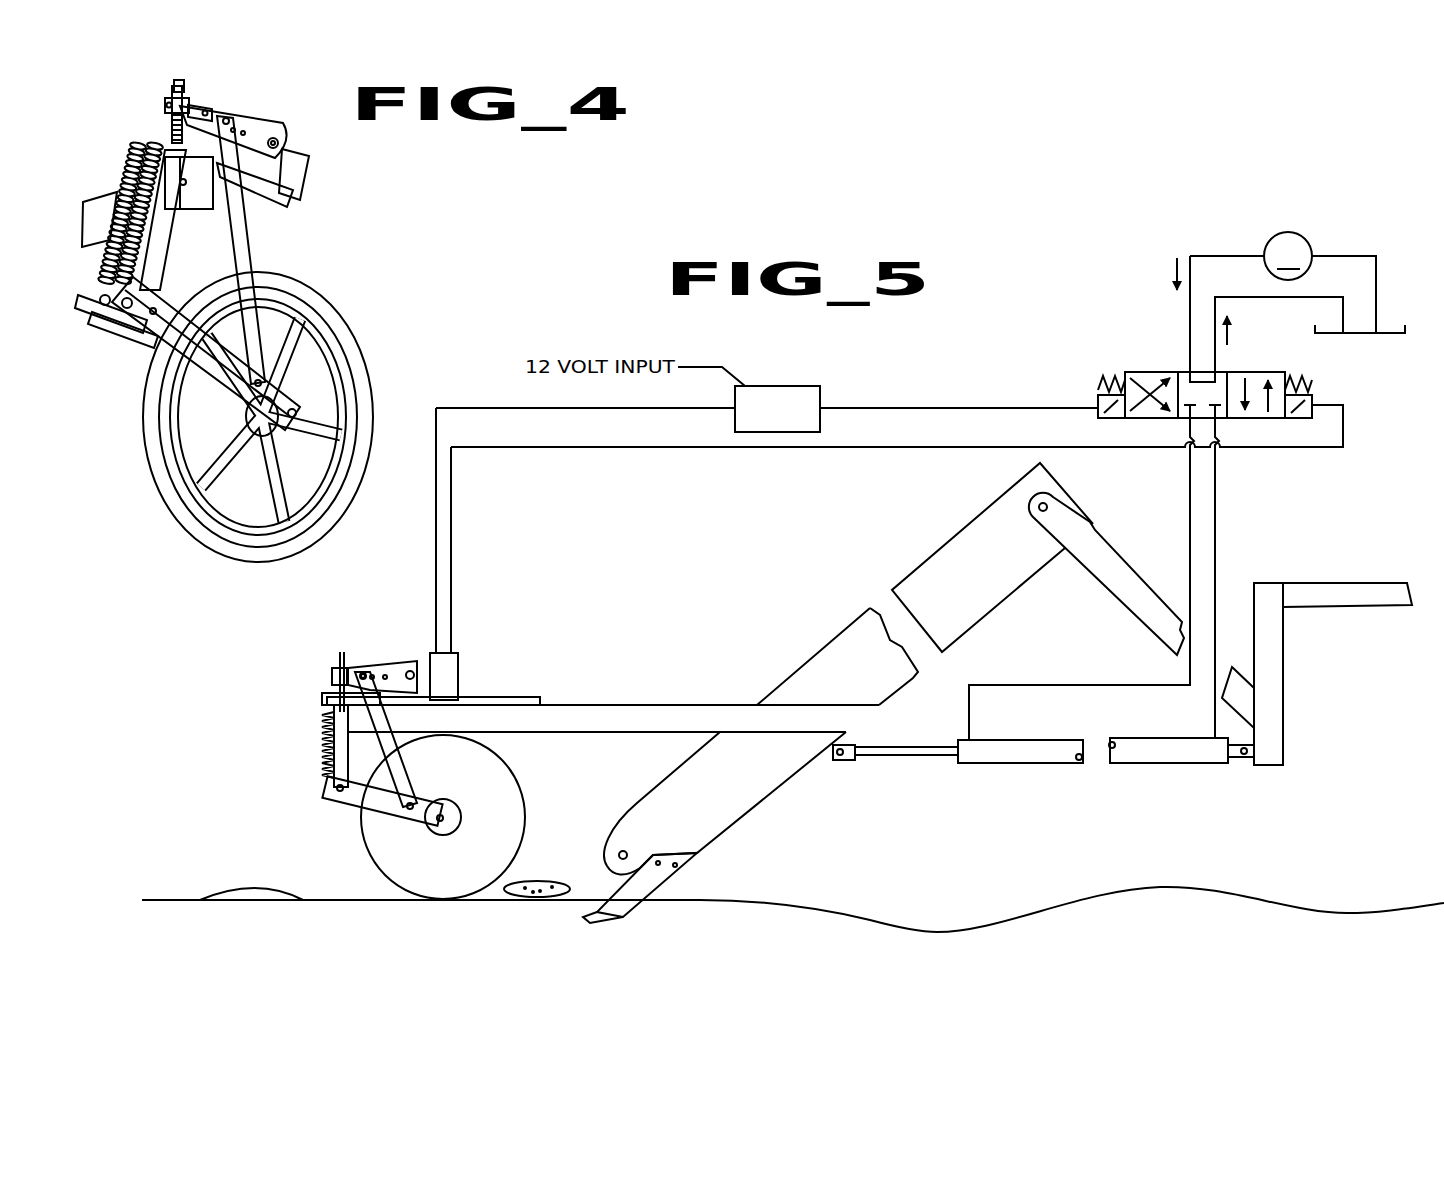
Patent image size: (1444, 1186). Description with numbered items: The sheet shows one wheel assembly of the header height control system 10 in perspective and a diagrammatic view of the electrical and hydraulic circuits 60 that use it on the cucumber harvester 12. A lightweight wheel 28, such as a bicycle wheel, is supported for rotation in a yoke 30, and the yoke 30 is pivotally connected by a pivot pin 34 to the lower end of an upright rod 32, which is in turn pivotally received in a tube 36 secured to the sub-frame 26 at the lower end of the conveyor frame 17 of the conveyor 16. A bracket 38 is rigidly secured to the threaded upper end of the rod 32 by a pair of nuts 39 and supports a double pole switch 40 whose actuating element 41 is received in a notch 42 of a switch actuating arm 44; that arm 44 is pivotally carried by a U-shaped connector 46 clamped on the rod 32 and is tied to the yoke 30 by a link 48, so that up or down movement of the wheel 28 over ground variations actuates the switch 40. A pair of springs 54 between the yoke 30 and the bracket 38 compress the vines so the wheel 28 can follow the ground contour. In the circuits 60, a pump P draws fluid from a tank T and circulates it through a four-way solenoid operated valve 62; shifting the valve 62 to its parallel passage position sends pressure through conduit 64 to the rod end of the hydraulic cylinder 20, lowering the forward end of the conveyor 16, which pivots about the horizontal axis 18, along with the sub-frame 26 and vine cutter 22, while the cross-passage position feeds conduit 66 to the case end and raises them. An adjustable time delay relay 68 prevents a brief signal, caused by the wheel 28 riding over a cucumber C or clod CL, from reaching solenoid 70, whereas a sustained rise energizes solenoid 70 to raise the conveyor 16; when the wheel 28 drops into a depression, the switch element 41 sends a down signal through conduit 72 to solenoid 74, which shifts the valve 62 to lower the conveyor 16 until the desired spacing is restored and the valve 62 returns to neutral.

In FIG. 4, the header height control system 10 is at (348, 167).
In FIG. 5, the header height control system 10 is at (480, 610).
In FIG. 5, the power driven harvester 12 is at (1300, 664).
In FIG. 5, the conveyor 16 is at (935, 548).
In FIG. 5, the conveyor frame 17 is at (850, 627).
In FIG. 5, the horizontal axis 18 is at (1050, 505).
In FIG. 5, the hydraulic cylinder 20 is at (1133, 764).
In FIG. 5, the vine cutter 22 is at (597, 915).
In FIG. 5, the sub-frame 26 is at (696, 712).
In FIG. 4, the wheel 28 is at (170, 508).
In FIG. 5, the wheel 28 is at (503, 772).
In FIG. 4, the yoke 30 is at (200, 384).
In FIG. 5, the yoke 30 is at (382, 803).
In FIG. 4, the rod 32 is at (172, 132).
In FIG. 5, the rod 32 is at (338, 665).
In FIG. 4, the pivot pin 34 is at (157, 342).
In FIG. 5, the pivot pin 34 is at (327, 795).
In FIG. 4, the tube 36 is at (163, 262).
In FIG. 5, the tube 36 is at (323, 773).
In FIG. 4, the bracket 38 is at (287, 212).
In FIG. 5, the bracket 38 is at (480, 700).
In FIG. 5, the nuts 39 is at (327, 712).
In FIG. 4, the double pole switch 40 is at (296, 187).
In FIG. 5, the double pole switch 40 is at (459, 676).
In FIG. 4, the actuating element 41 is at (295, 162).
In FIG. 5, the actuating element 41 is at (458, 658).
In FIG. 4, the notch 42 is at (272, 135).
In FIG. 5, the notch 42 is at (409, 670).
In FIG. 4, the switch actuating arm 44 is at (258, 122).
In FIG. 5, the switch actuating arm 44 is at (370, 665).
In FIG. 4, the U-shaped connector 46 is at (166, 100).
In FIG. 5, the U-shaped connector 46 is at (330, 677).
In FIG. 4, the link 48 is at (262, 264).
In FIG. 5, the link 48 is at (405, 768).
In FIG. 4, the springs 54 is at (145, 170).
In FIG. 5, the springs 54 is at (325, 760).
In FIG. 5, the combined hydraulic and electrical circuits 60 is at (1315, 228).
In FIG. 5, the four-way solenoid operated valve 62 is at (1177, 370).
In FIG. 5, the conduit 64 is at (1178, 685).
In FIG. 5, the conduit 66 is at (1218, 550).
In FIG. 5, the adjustable time delay relay 68 is at (823, 389).
In FIG. 5, the solenoid 70 is at (1097, 414).
In FIG. 5, the conduit 72 is at (860, 453).
In FIG. 5, the solenoid 74 is at (1312, 398).
In FIG. 5, the cucumber C is at (547, 880).
In FIG. 5, the clod CL is at (228, 897).
In FIG. 5, the tank T is at (1350, 340).